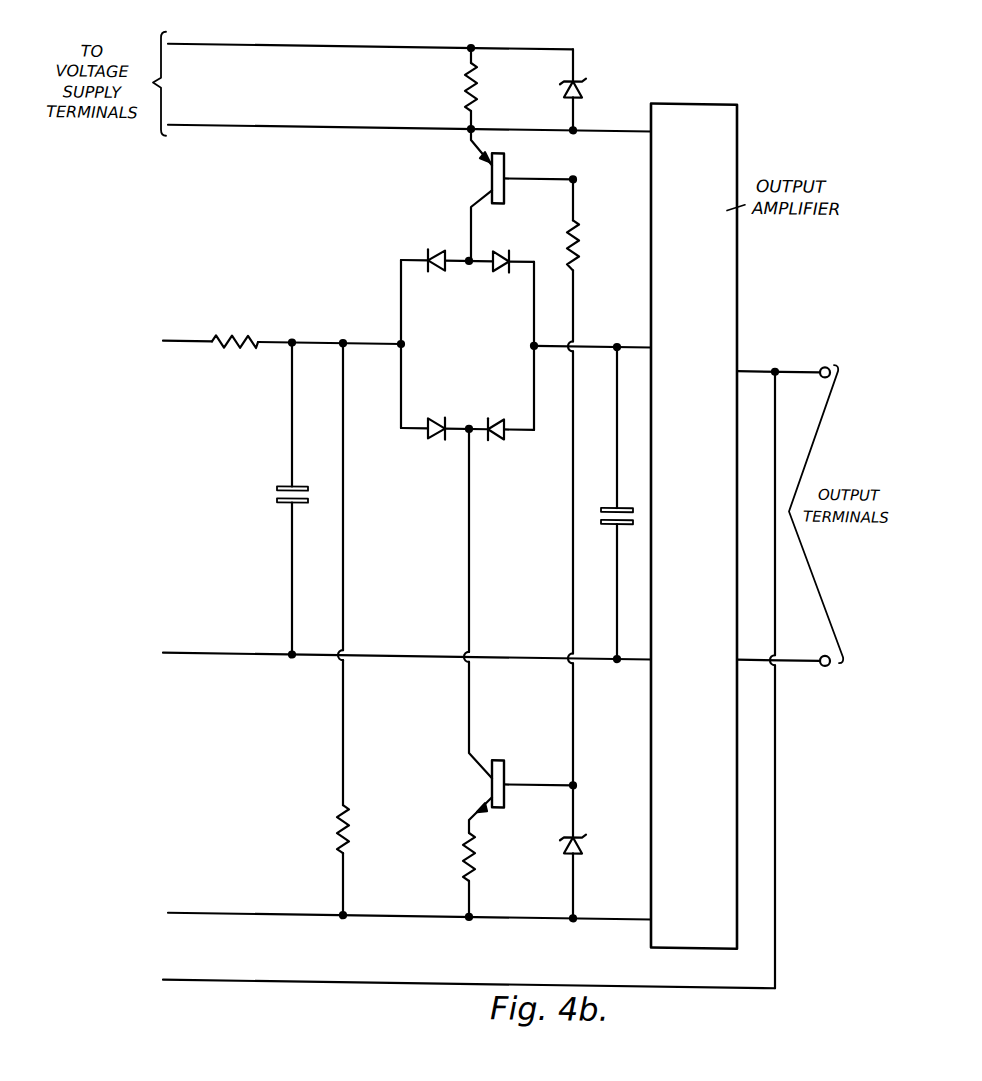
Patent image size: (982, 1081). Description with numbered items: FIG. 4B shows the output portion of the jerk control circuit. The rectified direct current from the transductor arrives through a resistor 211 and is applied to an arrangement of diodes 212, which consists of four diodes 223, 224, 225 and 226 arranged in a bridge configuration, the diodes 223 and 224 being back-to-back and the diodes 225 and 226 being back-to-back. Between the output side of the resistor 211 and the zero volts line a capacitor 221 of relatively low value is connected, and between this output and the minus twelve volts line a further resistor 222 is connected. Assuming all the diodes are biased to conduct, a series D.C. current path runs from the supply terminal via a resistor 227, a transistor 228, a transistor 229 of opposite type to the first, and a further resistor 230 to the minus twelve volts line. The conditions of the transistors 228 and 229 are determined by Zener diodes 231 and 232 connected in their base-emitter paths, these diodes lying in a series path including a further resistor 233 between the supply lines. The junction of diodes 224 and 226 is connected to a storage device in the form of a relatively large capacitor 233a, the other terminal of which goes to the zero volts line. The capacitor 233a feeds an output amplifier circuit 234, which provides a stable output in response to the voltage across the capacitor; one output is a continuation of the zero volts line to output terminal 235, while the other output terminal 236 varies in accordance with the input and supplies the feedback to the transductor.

The resistor 211 is at (247, 321).
The arrangement of diodes 212 is at (524, 354).
The capacitor 221 is at (274, 490).
The resistor 222 is at (345, 828).
The diode 223 is at (429, 254).
The diode 224 is at (505, 243).
The diode 225 is at (439, 452).
The diode 226 is at (493, 450).
The resistor 227 is at (460, 97).
The transistor 228 is at (480, 180).
The transistor 229 is at (507, 774).
The resistor 230 is at (491, 858).
The Zener diode 231 is at (582, 92).
The Zener diode 232 is at (600, 836).
The resistor 233 is at (577, 250).
The capacitor 233a is at (602, 516).
The output amplifier circuit 234 is at (712, 481).
The output terminal 235 is at (827, 645).
The output terminal 236 is at (820, 355).